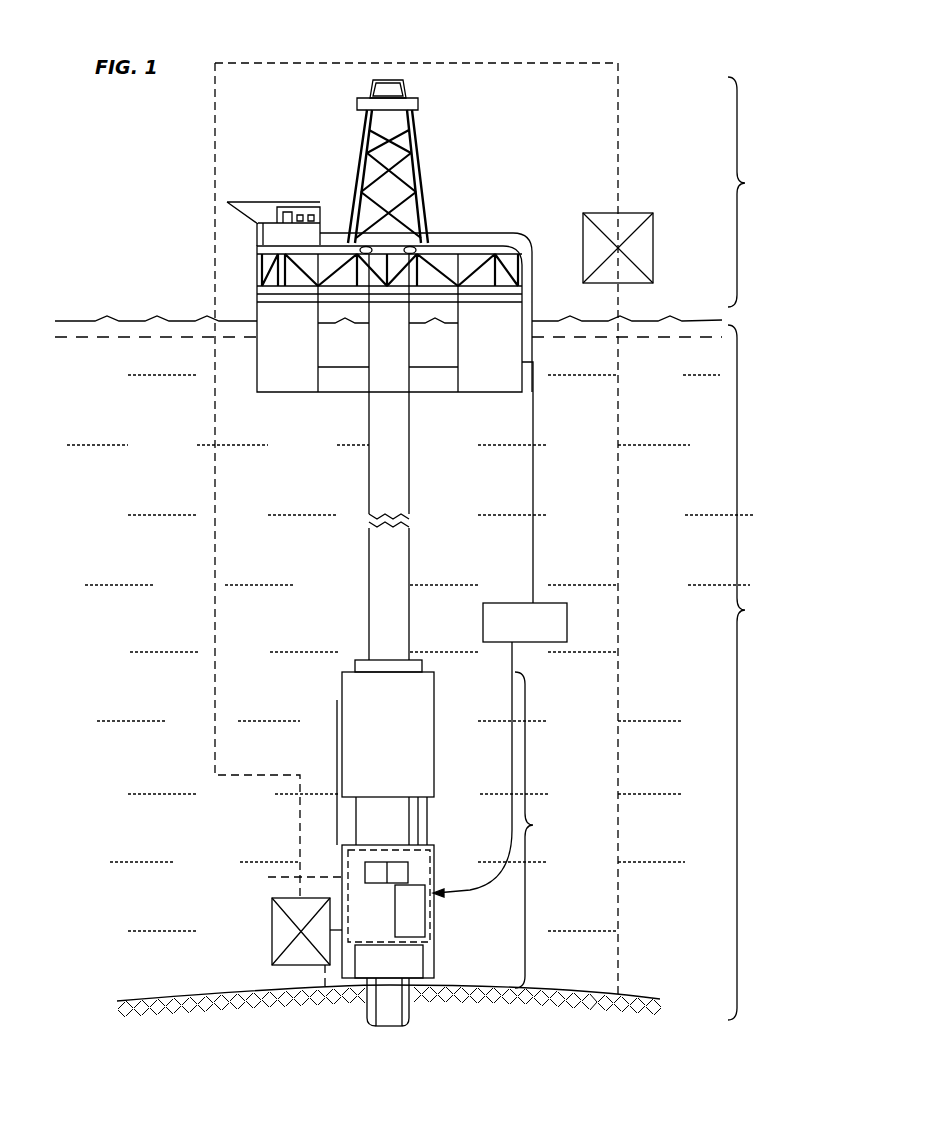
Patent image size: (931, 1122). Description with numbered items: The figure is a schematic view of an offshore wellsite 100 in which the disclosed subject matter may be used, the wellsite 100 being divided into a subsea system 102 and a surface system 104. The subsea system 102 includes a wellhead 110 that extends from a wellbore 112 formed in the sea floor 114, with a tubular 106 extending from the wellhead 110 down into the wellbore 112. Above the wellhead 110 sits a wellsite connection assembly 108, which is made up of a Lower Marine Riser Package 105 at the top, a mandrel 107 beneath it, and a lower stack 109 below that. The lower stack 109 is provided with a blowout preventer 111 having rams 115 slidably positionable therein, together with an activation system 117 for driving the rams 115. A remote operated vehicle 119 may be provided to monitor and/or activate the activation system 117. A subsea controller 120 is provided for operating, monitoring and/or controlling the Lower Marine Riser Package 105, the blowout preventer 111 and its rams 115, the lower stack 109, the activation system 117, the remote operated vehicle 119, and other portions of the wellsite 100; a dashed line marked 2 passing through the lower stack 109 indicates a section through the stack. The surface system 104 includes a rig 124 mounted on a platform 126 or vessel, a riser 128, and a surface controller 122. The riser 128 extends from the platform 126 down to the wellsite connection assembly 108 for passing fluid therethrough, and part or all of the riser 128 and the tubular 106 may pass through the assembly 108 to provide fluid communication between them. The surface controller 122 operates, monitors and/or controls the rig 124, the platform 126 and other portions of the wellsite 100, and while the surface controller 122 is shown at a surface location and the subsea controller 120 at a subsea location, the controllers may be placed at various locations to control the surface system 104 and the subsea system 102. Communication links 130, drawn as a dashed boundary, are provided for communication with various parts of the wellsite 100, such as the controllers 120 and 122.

The offshore wellsite 100 is at (707, 58).
The subsea system 102 is at (745, 610).
The surface system 104 is at (745, 183).
The Lower Marine Riser Package (LMRP) 105 is at (346, 672).
The tubular 106 is at (406, 1028).
The mandrel 107 is at (356, 820).
The wellsite connection assembly 108 is at (533, 825).
The lower stack 109 is at (342, 851).
The wellhead 110 is at (437, 957).
The blowout preventer 111 is at (428, 845).
The wellbore 112 is at (372, 1024).
The sea floor 114 is at (180, 997).
The rams 115 is at (409, 870).
The activation system 117 is at (437, 908).
The remote operated vehicle (ROV) 119 is at (500, 629).
The subsea controller 120 is at (272, 920).
The surface controller 122 is at (633, 212).
The rig 124 is at (412, 146).
The platform 126 is at (257, 306).
The riser 128 is at (410, 576).
The communication links 130 is at (215, 527).
The section line 2 is at (297, 877).